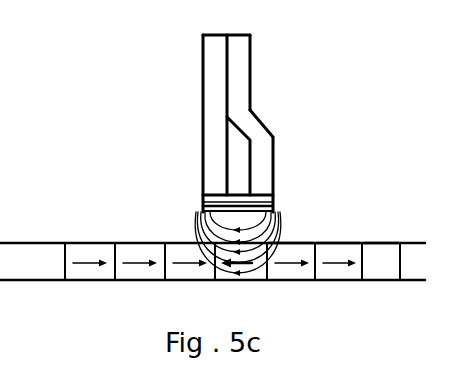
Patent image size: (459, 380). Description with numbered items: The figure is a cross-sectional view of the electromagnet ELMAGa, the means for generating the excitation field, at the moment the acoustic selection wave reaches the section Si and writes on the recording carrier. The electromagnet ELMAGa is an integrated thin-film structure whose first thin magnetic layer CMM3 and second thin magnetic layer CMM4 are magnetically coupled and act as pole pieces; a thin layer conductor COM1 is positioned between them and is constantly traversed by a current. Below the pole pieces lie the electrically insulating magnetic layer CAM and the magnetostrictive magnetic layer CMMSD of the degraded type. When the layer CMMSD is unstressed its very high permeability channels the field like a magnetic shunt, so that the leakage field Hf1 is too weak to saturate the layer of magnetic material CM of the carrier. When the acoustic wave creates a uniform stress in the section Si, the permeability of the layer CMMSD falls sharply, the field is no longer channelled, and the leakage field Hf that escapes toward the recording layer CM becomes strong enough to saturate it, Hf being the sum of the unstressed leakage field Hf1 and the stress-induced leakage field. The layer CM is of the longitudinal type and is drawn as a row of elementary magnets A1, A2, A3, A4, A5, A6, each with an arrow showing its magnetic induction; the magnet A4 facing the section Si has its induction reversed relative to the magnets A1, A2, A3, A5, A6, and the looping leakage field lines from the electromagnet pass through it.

The first thin magnetic layer CMM3 is at (211, 75).
The second thin magnetic layer CMM4 is at (240, 60).
The electromagnet ELMAGa is at (206, 157).
The thin layer conductor COM1 is at (258, 146).
The electrically insulating magnetic layer CAM is at (276, 200).
The magnetostrictive magnetic layer CMMSD is at (276, 211).
The cross-section Si is at (204, 212).
The leakage field Hf is at (291, 235).
The leakage field without stress Hf1 is at (338, 235).
The layer of magnetic material CM is at (30, 281).
The elementary magnet A1 is at (98, 281).
The elementary magnet A2 is at (138, 281).
The elementary magnet A3 is at (190, 281).
The elementary magnet A4 is at (243, 281).
The elementary magnet A5 is at (290, 281).
The elementary magnet A6 is at (335, 281).